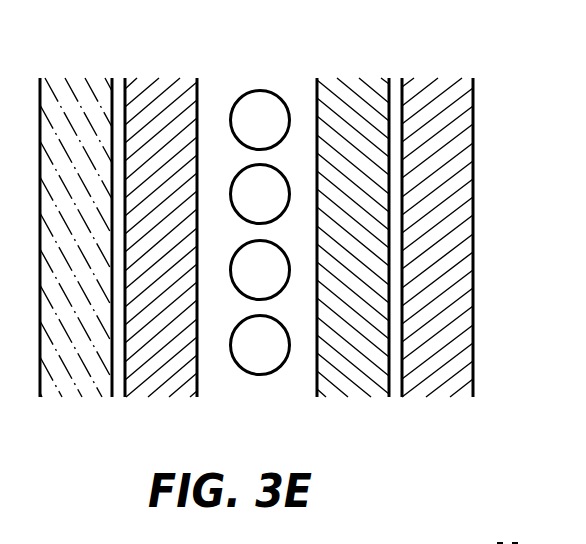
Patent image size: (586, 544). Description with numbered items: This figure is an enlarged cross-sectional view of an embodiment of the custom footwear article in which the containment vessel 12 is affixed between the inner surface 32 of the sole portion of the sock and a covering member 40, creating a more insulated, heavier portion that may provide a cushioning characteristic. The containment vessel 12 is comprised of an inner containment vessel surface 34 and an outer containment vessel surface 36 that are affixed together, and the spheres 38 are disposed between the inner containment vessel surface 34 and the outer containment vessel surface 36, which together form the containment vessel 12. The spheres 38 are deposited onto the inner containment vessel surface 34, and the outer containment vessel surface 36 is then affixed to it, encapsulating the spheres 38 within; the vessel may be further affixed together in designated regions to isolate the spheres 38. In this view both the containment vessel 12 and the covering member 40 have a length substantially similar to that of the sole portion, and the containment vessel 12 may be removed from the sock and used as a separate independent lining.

The containment vessel 12 is at (312, 419).
The inner surface 32 is at (72, 95).
The inner containment vessel surface 34 is at (165, 97).
The outer containment vessel surface 36 is at (355, 95).
The spheres 38 is at (262, 103).
The covering member 40 is at (437, 92).